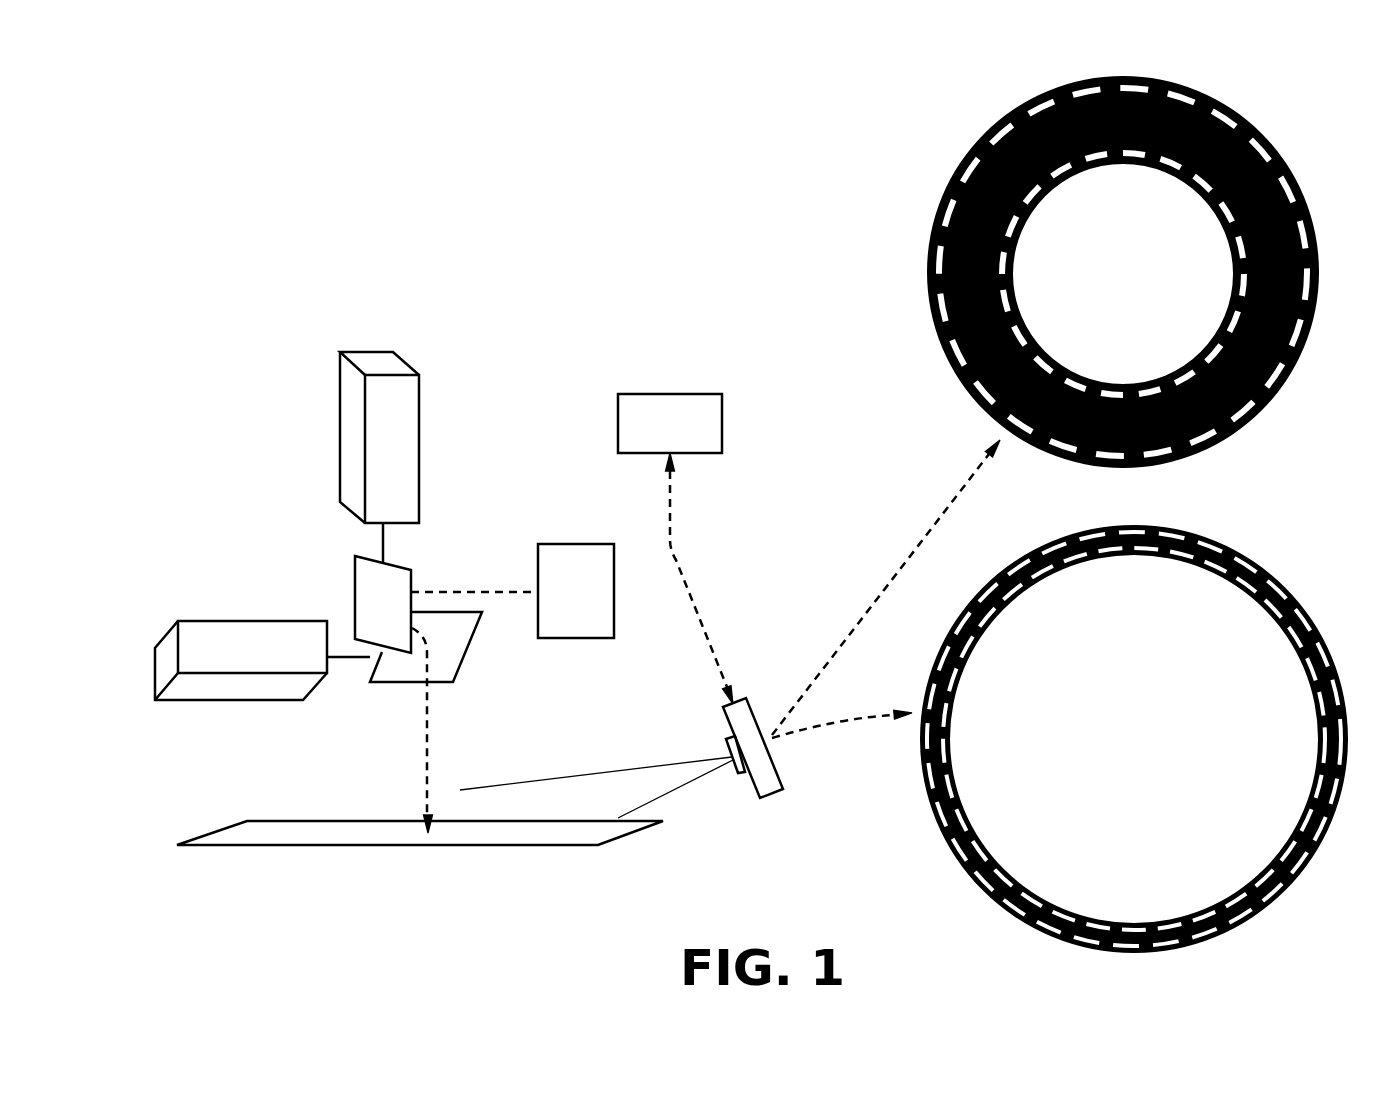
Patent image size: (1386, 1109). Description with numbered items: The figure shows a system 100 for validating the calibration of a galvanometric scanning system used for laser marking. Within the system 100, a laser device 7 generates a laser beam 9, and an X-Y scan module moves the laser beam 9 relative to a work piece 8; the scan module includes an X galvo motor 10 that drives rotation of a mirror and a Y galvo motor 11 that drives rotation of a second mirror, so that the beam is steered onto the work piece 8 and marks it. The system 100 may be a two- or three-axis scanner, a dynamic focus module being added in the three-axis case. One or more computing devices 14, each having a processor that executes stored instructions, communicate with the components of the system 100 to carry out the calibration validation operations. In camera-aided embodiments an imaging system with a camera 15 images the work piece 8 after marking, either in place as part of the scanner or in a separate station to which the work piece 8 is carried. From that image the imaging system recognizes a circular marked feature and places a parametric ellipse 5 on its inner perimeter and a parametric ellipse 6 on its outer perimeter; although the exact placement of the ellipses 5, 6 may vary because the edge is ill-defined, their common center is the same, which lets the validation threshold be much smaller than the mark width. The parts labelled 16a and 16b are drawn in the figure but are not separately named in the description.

The system 100 is at (553, 153).
The X galvo motor 10 is at (420, 452).
The Y galvo motor 11 is at (255, 621).
The laser beam 9 is at (473, 590).
The laser device 7 is at (563, 606).
The computing device 14 is at (657, 438).
The work piece 8 is at (348, 821).
The camera 16a is at (752, 786).
The parametric ellipse 5 is at (925, 298).
The parametric ellipse 6 is at (1014, 268).
The camera 15 is at (1233, 547).
The marking ring on tire 16b is at (996, 852).